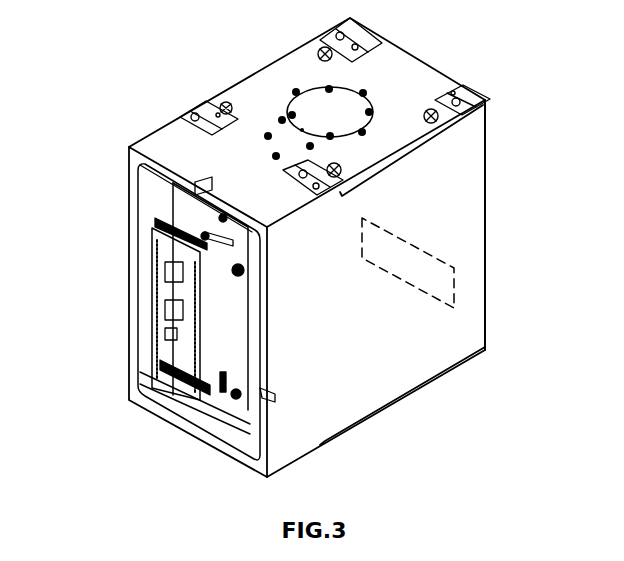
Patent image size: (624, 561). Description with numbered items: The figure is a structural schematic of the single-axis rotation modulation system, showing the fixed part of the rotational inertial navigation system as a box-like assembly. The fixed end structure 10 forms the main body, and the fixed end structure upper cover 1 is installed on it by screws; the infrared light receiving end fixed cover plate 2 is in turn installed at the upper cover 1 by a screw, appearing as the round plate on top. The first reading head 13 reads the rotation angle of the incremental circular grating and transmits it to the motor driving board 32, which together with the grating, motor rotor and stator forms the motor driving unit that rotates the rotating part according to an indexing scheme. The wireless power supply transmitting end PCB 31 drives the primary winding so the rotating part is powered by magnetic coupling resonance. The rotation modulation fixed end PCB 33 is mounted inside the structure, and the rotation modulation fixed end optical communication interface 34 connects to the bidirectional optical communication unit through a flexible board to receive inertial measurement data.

The fixed end structure upper cover 1 is at (400, 82).
The fixed end structure 10 is at (453, 193).
The first reading head 13 is at (425, 272).
The infrared light receiving end fixed cover plate 2 is at (330, 112).
The wireless power supply transmitting end PCB 31 is at (185, 392).
The motor driving board 32 is at (175, 339).
The rotation modulation fixed end PCB 33 is at (187, 202).
The rotation modulation fixed end optical communication interface 34 is at (223, 218).